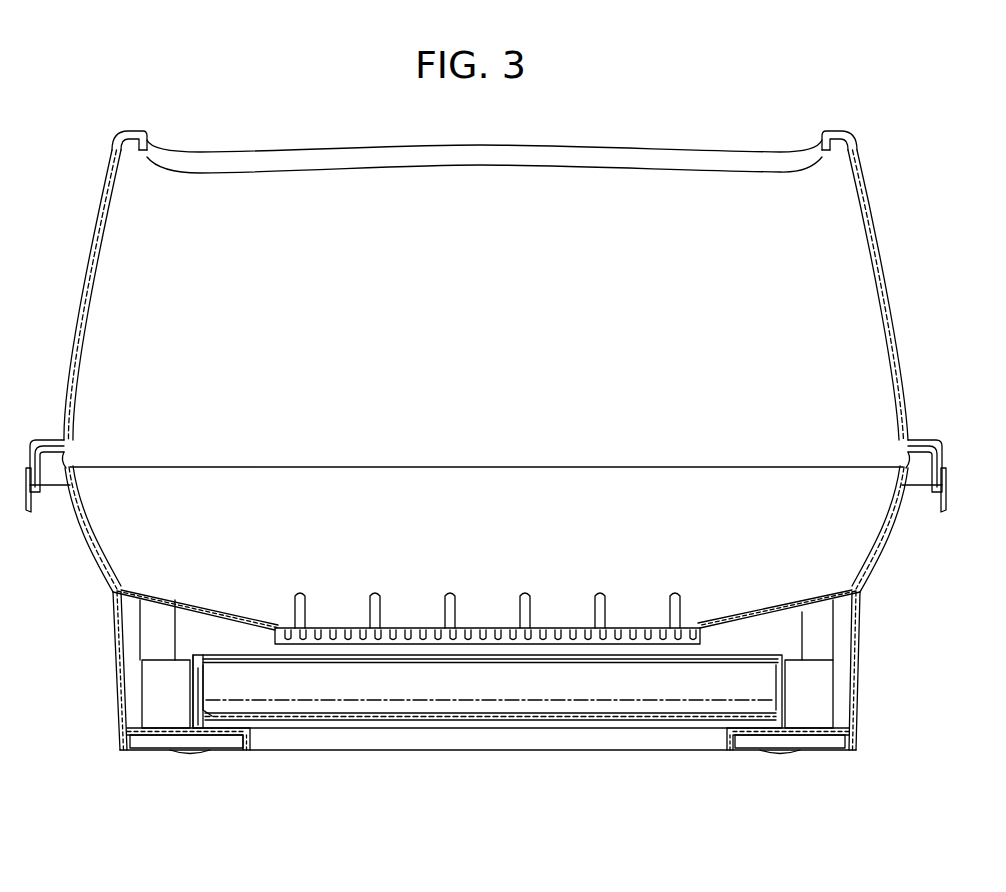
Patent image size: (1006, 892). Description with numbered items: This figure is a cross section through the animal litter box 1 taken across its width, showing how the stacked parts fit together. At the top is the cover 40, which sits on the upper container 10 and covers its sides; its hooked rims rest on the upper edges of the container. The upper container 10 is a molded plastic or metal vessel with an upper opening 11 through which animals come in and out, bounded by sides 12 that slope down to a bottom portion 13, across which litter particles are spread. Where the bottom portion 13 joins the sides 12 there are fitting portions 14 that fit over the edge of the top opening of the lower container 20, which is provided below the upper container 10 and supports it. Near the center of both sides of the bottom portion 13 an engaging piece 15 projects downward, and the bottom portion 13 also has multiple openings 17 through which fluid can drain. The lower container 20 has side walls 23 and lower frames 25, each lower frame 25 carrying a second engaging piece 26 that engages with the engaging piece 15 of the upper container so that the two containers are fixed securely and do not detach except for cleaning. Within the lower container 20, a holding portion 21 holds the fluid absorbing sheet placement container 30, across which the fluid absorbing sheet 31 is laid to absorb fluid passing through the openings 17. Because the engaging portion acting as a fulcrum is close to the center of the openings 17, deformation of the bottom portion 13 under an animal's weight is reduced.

The animal litter box 1 is at (901, 120).
The upper container 10 is at (534, 639).
The upper opening 11 is at (569, 488).
The sides 12 is at (889, 548).
The bottom portion 13 is at (723, 618).
The fitting portion 14 is at (615, 594).
The engaging piece 15 is at (160, 641).
The openings 17 is at (630, 625).
The lower container 20 is at (866, 748).
The holding portion 21 is at (218, 688).
The side walls 23 is at (863, 708).
The lower frames 25 is at (150, 742).
The second engaging piece 26 is at (160, 690).
The fluid absorbing sheet placement container 30 is at (487, 733).
The fluid absorbing sheet 31 is at (685, 708).
The cover 40 is at (900, 262).